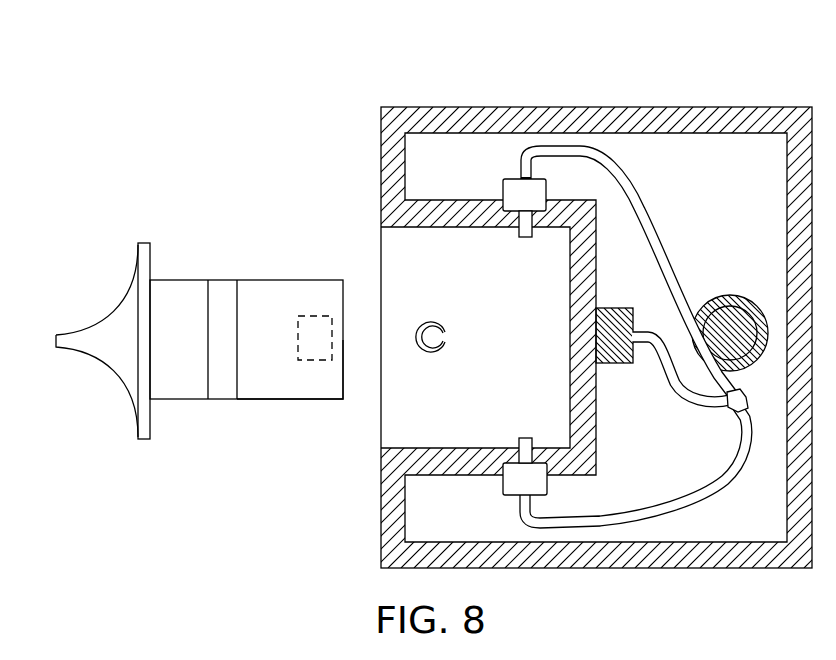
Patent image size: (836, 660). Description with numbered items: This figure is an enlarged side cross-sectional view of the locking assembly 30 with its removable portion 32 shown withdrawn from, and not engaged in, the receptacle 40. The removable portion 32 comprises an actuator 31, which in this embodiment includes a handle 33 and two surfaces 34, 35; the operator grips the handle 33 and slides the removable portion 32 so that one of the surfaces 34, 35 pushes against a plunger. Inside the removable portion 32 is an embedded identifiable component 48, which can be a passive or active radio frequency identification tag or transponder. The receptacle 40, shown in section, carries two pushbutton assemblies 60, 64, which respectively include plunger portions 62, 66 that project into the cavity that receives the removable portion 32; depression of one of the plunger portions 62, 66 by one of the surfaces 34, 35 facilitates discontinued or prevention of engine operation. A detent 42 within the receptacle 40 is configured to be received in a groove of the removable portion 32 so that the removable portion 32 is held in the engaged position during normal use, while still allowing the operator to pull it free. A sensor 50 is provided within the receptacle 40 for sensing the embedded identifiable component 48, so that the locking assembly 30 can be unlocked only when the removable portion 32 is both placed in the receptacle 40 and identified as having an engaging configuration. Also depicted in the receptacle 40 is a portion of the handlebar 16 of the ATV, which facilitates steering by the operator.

The locking assembly 30 is at (212, 117).
The actuator 31 is at (118, 402).
The removable portion 32 is at (98, 408).
The handle 33 is at (98, 327).
The surface 34 is at (292, 280).
The surface 35 is at (302, 398).
The embedded identifiable component 48 is at (300, 337).
The receptacle 40 is at (435, 107).
The detent 42 is at (445, 335).
The sensor 50 is at (610, 308).
The handlebar 16 is at (728, 295).
The pushbutton assembly 60 is at (503, 190).
The plunger portion 62 is at (519, 233).
The pushbutton assembly 64 is at (503, 485).
The plunger portion 66 is at (520, 442).